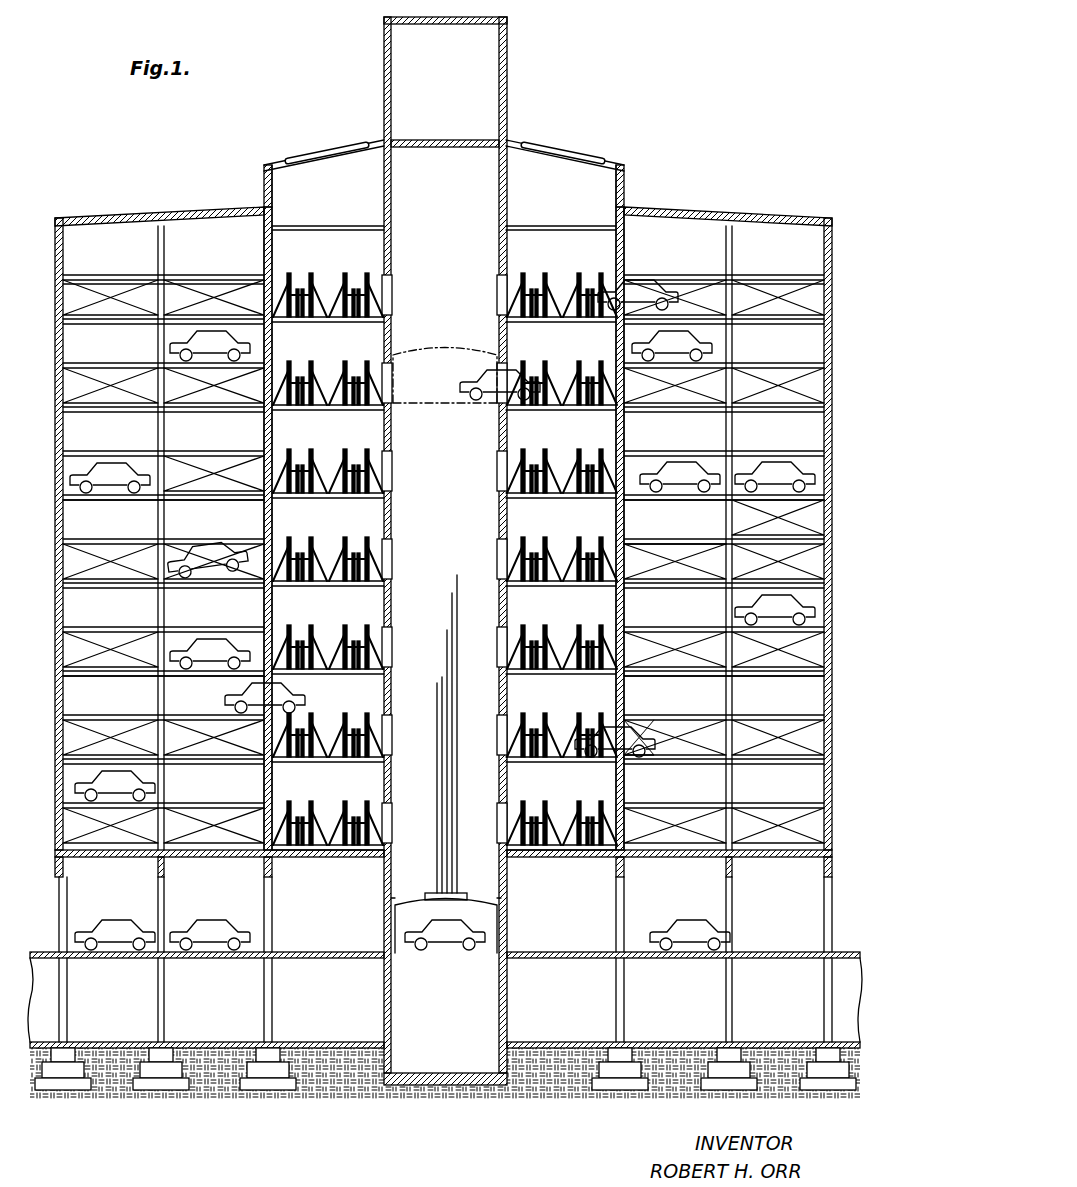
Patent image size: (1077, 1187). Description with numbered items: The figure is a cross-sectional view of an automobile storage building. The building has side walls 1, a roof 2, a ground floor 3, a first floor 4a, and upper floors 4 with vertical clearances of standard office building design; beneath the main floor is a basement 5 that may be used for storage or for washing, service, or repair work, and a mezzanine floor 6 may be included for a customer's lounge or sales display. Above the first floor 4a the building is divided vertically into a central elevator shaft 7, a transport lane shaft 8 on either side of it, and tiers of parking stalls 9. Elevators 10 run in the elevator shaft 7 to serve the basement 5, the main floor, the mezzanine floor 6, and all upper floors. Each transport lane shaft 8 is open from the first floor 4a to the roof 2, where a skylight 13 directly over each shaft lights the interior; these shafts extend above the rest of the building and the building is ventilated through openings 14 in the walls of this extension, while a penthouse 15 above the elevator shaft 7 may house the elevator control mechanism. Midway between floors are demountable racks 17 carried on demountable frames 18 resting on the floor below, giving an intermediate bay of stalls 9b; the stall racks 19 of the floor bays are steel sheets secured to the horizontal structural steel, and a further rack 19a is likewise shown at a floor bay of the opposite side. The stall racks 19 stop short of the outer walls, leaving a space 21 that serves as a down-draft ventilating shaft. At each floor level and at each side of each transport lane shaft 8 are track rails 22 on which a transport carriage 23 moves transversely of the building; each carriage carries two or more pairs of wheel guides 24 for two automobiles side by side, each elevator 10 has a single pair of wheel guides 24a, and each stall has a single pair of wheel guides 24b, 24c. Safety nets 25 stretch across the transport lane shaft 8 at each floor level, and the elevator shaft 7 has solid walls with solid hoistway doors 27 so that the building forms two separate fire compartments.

The side wall 1 is at (58, 575).
The roof 2 is at (150, 222).
The ground floor 3 is at (45, 928).
The upper floor 4 is at (745, 330).
The first floor 4a is at (222, 860).
The basement 5 is at (125, 1040).
The mezzanine floor 6 is at (590, 905).
The elevator shaft 7 is at (445, 551).
The transport lane shaft 8 is at (444, 242).
The parking stall 9 is at (443, 605).
The intermediate stall 9b is at (447, 652).
The elevator 10 is at (475, 905).
The skylight 13 is at (330, 150).
The ventilating opening 14 is at (262, 197).
The penthouse 15 is at (445, 82).
The demountable rack 17 is at (110, 278).
The demountable frame 18 is at (62, 378).
The stall rack 19 is at (70, 510).
The floor beam 19a is at (640, 505).
The ventilating space 21 is at (65, 306).
The track rail 22 is at (300, 500).
The transport carriage 23 is at (335, 330).
The automobile wheel guide 24 is at (505, 428).
The elevator wheel guide 24a is at (440, 958).
The stall wheel guide 24b is at (185, 495).
The stall wheel guide 24c is at (192, 455).
The safety net 25 is at (275, 600).
The hoistway door 27 is at (498, 300).